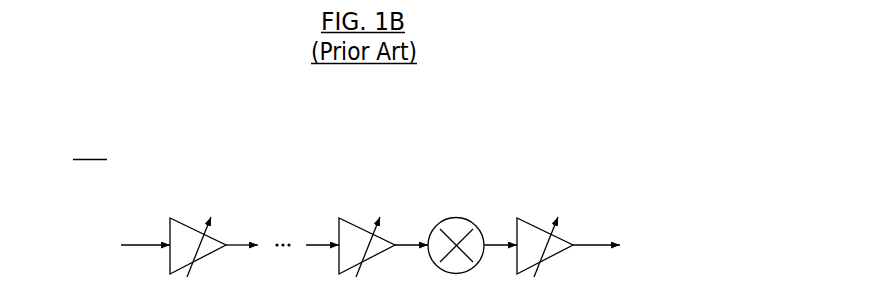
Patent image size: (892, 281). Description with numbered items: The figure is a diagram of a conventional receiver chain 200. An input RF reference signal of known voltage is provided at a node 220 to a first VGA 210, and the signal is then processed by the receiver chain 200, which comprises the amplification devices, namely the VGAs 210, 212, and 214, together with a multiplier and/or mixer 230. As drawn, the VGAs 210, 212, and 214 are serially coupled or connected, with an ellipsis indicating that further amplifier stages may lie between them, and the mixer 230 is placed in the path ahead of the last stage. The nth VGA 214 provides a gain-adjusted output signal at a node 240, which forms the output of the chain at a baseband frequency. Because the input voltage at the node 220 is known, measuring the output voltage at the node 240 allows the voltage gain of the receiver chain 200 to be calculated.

The receiver chain 200 is at (621, 122).
The first VGA 210 is at (176, 215).
The VGA 212 is at (343, 215).
The nth VGA 214 is at (521, 215).
The node 220 is at (136, 241).
The multiplier and/or mixer 230 is at (450, 211).
The node 240 is at (591, 239).